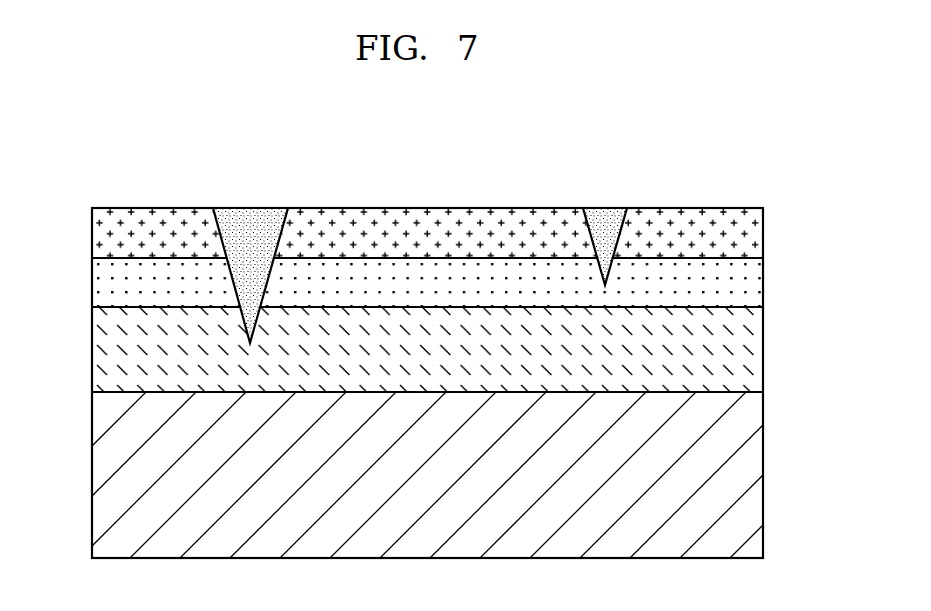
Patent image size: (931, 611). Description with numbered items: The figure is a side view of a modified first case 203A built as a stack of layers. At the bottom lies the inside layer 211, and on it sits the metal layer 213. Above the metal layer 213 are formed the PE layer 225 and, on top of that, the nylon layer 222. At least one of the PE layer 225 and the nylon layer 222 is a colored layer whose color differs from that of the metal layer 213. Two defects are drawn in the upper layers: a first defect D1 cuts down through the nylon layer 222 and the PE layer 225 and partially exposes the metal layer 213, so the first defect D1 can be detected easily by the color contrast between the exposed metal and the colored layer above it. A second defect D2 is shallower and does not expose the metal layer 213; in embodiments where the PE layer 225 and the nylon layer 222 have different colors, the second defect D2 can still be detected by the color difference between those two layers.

The first case 203A is at (700, 197).
The nylon layer 222 is at (100, 233).
The PE layer 225 is at (100, 282).
The metal layer 213 is at (104, 354).
The inside layer 211 is at (100, 484).
The first defect D1 is at (250, 261).
The second defect D2 is at (605, 232).